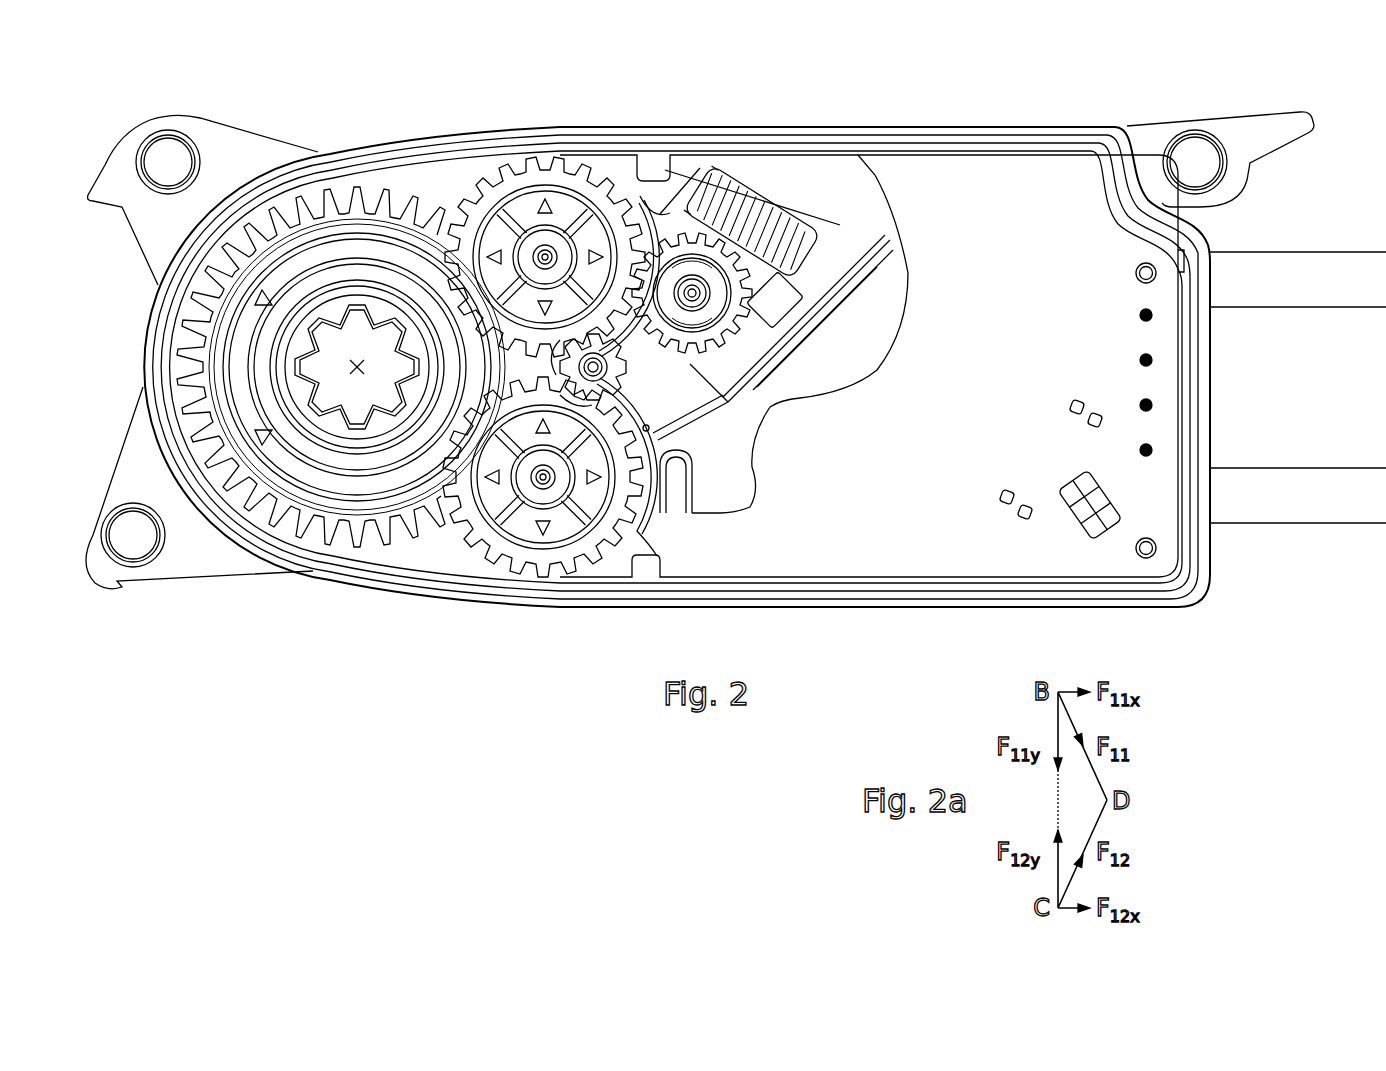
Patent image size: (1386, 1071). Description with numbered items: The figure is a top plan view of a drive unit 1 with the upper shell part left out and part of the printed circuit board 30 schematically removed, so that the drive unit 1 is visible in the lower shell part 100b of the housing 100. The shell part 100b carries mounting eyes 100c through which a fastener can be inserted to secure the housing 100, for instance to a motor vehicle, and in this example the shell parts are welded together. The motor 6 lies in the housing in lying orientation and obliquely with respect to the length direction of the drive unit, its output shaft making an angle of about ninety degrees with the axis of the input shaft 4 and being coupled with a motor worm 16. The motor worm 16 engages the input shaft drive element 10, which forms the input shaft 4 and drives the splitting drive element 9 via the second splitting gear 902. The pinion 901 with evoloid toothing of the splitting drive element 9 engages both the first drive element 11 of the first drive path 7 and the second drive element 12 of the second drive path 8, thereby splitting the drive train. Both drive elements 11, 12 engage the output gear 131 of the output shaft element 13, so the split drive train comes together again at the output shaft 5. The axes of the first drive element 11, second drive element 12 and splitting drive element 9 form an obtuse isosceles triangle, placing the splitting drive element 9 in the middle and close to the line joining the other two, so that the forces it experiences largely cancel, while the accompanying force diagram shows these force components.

The drive unit 1 is at (1084, 74).
The input shaft 4 is at (692, 293).
The output shaft 5 is at (378, 245).
The motor 6 is at (875, 323).
The first drive path 7 is at (474, 126).
The second drive path 8 is at (474, 594).
The splitting drive element 9 is at (605, 372).
The input shaft drive element 10 is at (702, 292).
The first drive element 11 is at (545, 185).
The second drive element 12 is at (545, 548).
The output shaft element 13 is at (318, 222).
The motor worm 16 is at (780, 215).
The printed circuit board 30 is at (937, 200).
The housing 100 is at (1205, 609).
The shell part 100b is at (1212, 596).
The mounting eyes 100c is at (168, 162).
The output gear 131 is at (182, 352).
The pinion 901 is at (655, 380).
The second splitting gear 902 is at (676, 505).